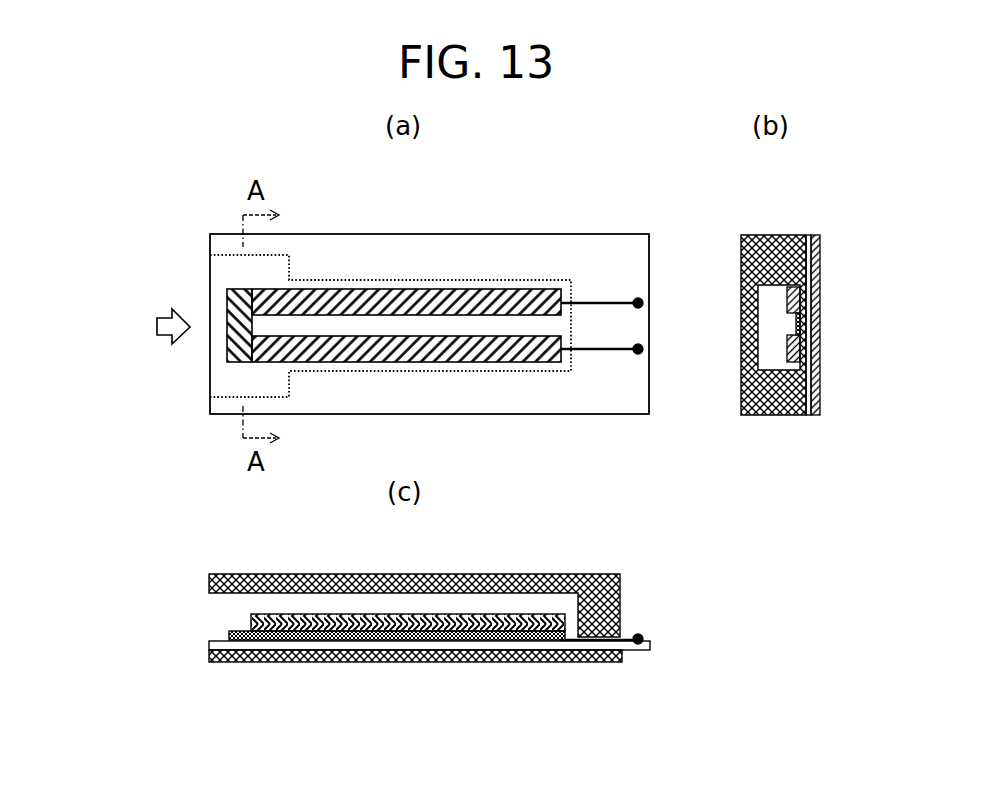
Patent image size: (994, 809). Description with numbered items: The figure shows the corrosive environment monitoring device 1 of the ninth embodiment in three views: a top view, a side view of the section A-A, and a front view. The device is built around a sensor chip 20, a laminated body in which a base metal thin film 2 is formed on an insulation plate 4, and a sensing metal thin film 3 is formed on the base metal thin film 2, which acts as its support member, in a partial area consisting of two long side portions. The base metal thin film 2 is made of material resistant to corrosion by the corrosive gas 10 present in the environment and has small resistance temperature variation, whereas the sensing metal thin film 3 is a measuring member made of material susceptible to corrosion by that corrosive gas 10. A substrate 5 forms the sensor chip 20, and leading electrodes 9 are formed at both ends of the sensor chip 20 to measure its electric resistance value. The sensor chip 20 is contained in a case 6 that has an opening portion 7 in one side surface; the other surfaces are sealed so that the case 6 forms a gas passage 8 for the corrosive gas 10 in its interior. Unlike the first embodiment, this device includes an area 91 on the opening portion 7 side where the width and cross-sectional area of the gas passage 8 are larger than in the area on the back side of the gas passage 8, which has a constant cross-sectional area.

The corrosive environment monitoring device 1 is at (603, 232).
The base metal thin film 2 is at (803, 300).
The sensing metal thin film 3 is at (395, 293).
The insulation plate 4 is at (816, 292).
The substrate 5 is at (530, 398).
The case 6 is at (750, 355).
The opening portion 7 is at (209, 302).
The gas passage 8 is at (565, 288).
The leading electrodes 9 is at (597, 351).
The corrosive gas 10 is at (160, 318).
The sensor chip 20 is at (185, 614).
The area where the width of the gas passage is wide 91 is at (292, 270).